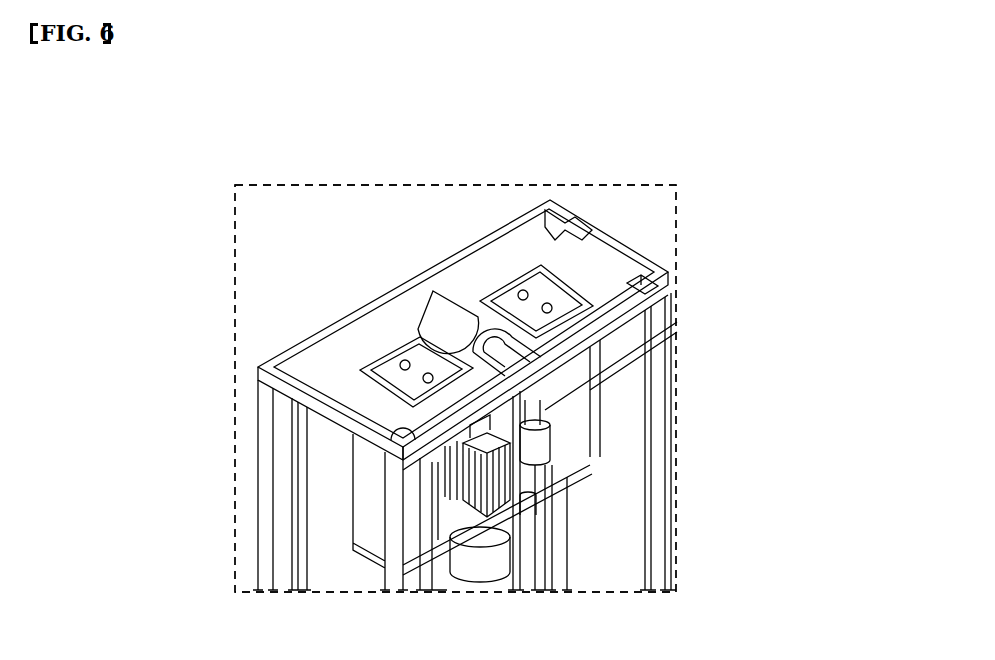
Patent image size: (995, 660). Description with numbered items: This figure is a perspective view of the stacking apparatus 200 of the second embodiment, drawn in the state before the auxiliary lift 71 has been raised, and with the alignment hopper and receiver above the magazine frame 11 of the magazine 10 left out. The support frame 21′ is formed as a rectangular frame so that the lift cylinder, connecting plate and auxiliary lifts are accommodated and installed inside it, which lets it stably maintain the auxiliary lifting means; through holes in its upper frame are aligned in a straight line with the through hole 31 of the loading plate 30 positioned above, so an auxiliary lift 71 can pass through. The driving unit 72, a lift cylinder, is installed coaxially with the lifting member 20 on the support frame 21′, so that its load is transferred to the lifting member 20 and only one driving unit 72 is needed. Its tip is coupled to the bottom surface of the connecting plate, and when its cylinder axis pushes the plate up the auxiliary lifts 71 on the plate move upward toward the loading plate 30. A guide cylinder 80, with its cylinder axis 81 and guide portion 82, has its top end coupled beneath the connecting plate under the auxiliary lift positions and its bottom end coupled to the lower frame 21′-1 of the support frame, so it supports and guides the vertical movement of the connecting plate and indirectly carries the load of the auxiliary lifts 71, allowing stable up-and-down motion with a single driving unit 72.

The magazine 10 is at (226, 463).
The magazine frame 11 is at (265, 402).
The lifting member 20 is at (483, 587).
The support frame 21′ is at (361, 503).
The lower frame 21′-1 is at (515, 495).
The loading plate 30 is at (527, 258).
The through hole 31 is at (497, 292).
The auxiliary lift 71 is at (605, 227).
The driving unit (lift cylinder) 72 is at (463, 490).
The guide cylinder 80 is at (576, 422).
The cylinder axis 81 is at (677, 323).
The guide portion 82 is at (541, 444).
The stacking apparatus 200 is at (867, 235).